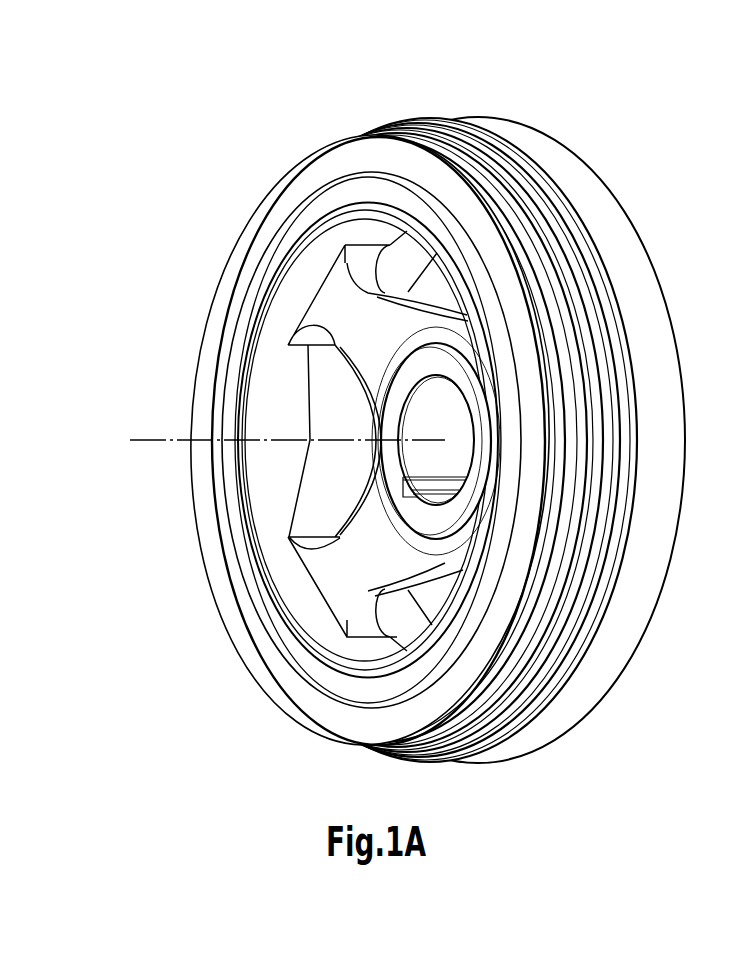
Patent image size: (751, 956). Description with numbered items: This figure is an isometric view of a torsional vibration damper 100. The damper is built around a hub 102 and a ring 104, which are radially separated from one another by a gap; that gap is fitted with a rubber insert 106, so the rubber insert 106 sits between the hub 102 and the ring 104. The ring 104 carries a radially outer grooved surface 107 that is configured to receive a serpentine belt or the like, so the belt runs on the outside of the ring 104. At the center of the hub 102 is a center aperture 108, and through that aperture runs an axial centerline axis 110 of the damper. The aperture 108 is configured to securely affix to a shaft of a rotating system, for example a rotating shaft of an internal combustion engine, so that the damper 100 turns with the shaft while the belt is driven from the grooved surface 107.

The torsional vibration damper 100 is at (421, 418).
The hub 102 is at (370, 553).
The ring 104 is at (358, 153).
The rubber insert 106 is at (237, 322).
The radially outer grooved surface 107 is at (590, 483).
The center aperture 108 is at (458, 388).
The axial centerline axis 110 is at (147, 455).